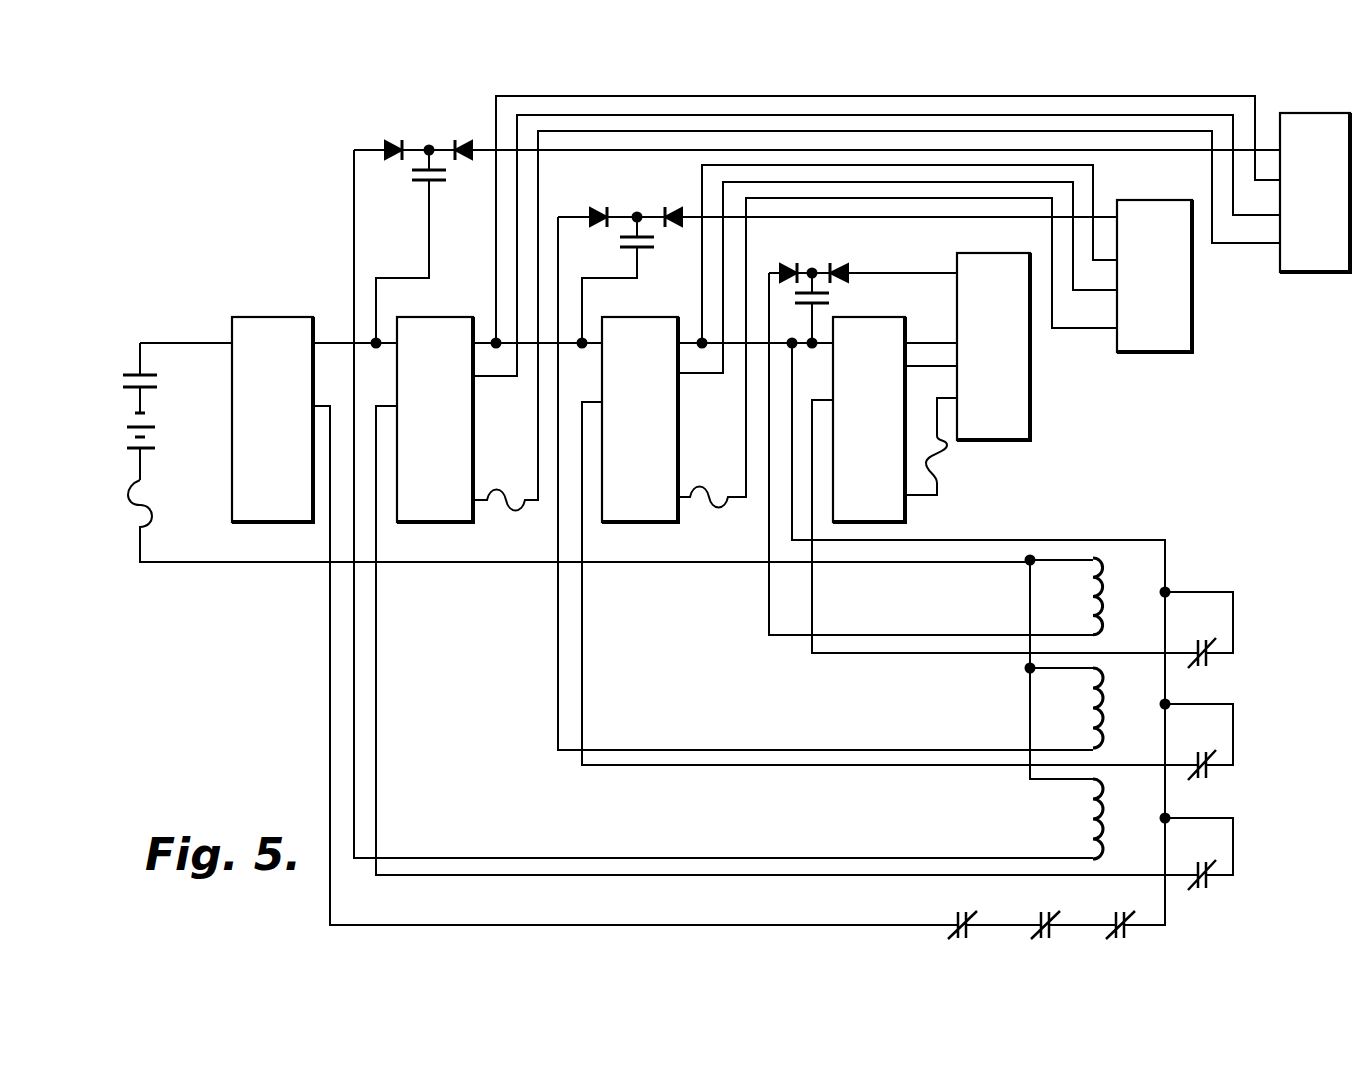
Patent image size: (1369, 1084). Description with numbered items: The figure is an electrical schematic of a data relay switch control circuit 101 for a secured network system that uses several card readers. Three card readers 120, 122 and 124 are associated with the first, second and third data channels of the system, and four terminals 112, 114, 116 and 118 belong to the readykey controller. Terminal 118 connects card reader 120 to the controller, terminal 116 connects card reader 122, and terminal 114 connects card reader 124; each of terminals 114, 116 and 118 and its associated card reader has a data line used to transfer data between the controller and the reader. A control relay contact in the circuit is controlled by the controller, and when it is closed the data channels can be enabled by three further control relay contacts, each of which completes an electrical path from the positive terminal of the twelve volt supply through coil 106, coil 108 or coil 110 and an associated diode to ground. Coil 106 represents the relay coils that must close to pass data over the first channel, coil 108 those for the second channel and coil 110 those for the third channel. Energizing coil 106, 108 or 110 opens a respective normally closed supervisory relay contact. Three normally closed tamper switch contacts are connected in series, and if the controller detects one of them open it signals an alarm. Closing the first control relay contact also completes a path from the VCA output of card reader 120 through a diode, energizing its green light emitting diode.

The data relay switch control circuit 101 is at (312, 170).
The coil 106 is at (1100, 605).
The coil 108 is at (1100, 716).
The coil 110 is at (1100, 828).
The terminal 112 is at (262, 524).
The terminal 114 is at (423, 524).
The terminal 116 is at (627, 524).
The terminal 118 is at (907, 512).
The card reader 120 is at (988, 442).
The card reader 122 is at (1138, 354).
The card reader 124 is at (1294, 274).